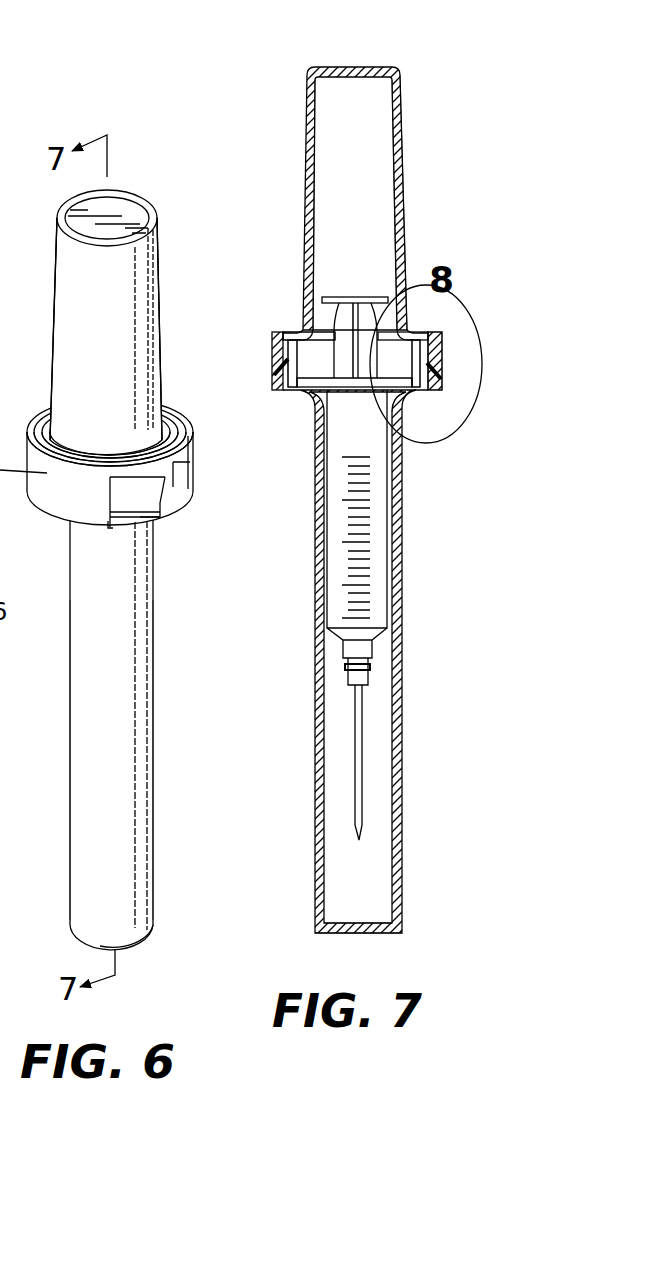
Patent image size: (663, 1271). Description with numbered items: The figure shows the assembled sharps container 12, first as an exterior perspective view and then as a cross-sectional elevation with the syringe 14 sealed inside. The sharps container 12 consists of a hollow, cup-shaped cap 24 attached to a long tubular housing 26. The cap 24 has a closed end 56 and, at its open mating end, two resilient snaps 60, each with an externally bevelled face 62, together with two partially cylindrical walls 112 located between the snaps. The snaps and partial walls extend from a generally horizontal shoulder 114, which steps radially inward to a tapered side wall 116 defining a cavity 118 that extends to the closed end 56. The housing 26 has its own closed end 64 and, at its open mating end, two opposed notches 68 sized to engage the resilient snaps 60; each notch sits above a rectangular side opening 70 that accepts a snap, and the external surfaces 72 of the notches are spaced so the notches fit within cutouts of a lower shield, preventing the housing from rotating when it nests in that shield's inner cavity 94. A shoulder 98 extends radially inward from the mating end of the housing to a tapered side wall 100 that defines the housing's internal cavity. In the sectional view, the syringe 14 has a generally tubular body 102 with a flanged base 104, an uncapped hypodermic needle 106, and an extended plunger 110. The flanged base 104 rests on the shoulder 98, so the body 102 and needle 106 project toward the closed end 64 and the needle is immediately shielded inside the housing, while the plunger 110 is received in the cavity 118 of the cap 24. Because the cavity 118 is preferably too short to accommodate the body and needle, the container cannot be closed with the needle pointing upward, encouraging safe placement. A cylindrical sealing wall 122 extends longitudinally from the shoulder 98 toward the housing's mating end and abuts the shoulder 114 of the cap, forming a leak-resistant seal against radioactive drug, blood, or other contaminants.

In FIG. 6, the sharps container 12 is at (282, 953).
In FIG. 7, the syringe 14 is at (350, 296).
In FIG. 6, the cap 24 is at (303, 236).
In FIG. 6, the housing 26 is at (314, 838).
In FIG. 6, the closed end 56 is at (113, 210).
In FIG. 7, the closed end 56 is at (362, 67).
In FIG. 7, the resilient snaps 60 is at (272, 383).
In FIG. 7, the externally bevelled face 62 is at (432, 388).
In FIG. 6, the closed end 64 is at (148, 926).
In FIG. 7, the closed end 64 is at (340, 928).
In FIG. 6, the notches 68 is at (128, 478).
In FIG. 6, the rectangular side opening 70 is at (148, 520).
In FIG. 6, the external surfaces 72 is at (142, 490).
In FIG. 7, the external surfaces 72 is at (271, 348).
In FIG. 7, the inner cavity 94 is at (392, 876).
In FIG. 6, the shoulder 98 is at (110, 524).
In FIG. 7, the shoulder 98 is at (400, 398).
In FIG. 6, the tapered side wall 100 is at (156, 786).
In FIG. 7, the tapered side wall 100 is at (399, 657).
In FIG. 7, the tubular body 102 is at (362, 432).
In FIG. 7, the flanged base 104 is at (405, 296).
In FIG. 7, the hypodermic needle 106 is at (362, 747).
In FIG. 7, the plunger 110 is at (370, 296).
In FIG. 6, the partially cylindrical walls 112 is at (186, 463).
In FIG. 6, the shoulder 114 is at (176, 410).
In FIG. 7, the shoulder 114 is at (300, 330).
In FIG. 6, the tapered side wall 116 is at (163, 340).
In FIG. 7, the tapered side wall 116 is at (404, 158).
In FIG. 7, the cavity 118 is at (390, 115).
In FIG. 7, the cylindrical sealing wall 122 is at (393, 380).